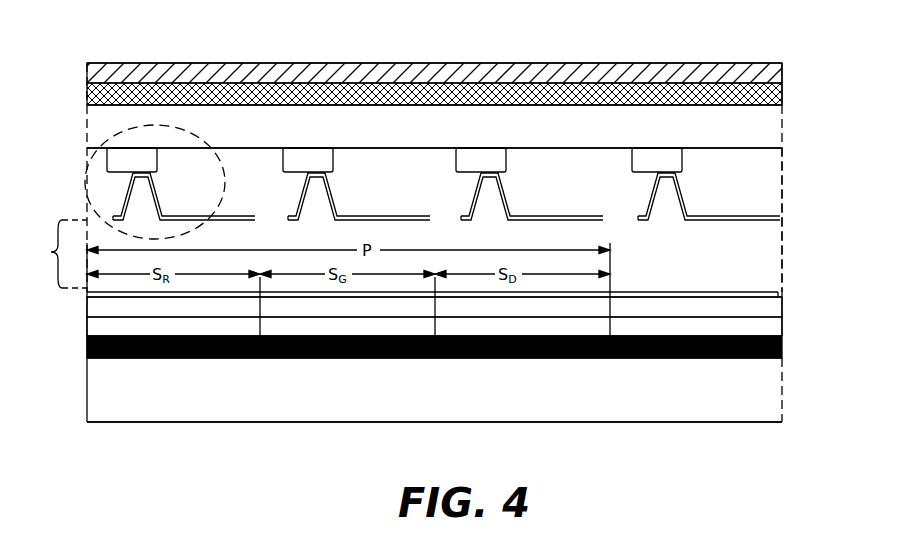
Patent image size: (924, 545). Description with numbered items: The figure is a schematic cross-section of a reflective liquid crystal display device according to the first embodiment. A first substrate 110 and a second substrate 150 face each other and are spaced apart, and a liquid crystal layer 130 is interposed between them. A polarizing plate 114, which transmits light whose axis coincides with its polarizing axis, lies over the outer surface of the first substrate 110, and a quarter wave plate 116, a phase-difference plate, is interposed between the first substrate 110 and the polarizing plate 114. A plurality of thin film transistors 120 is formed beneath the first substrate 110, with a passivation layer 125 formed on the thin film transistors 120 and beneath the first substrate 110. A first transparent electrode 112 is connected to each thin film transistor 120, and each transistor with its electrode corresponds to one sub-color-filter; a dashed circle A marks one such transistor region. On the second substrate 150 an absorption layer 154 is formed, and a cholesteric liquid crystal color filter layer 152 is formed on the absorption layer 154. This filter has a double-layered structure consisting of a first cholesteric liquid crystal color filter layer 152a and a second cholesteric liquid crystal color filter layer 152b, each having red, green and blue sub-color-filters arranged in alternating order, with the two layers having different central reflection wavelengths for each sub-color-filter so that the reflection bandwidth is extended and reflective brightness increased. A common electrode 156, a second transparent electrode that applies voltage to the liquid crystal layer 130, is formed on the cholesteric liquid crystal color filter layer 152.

The polarizing plate 114 is at (783, 77).
The quarter wave plate 116 is at (783, 103).
The first substrate 110 is at (444, 132).
The first transparent electrode 112 is at (386, 216).
The thin film transistor 120 is at (683, 160).
The passivation layer 125 is at (767, 192).
The liquid crystal layer 130 is at (52, 256).
The common electrode 156 is at (660, 292).
The second cholesteric liquid crystal color filter layer 152b is at (782, 297).
The first cholesteric liquid crystal color filter layer 152a is at (782, 317).
The cholesteric liquid crystal color filter layer 152 is at (862, 304).
The absorption layer 154 is at (783, 355).
The second substrate 150 is at (441, 397).
The enlarged region A is at (200, 130).